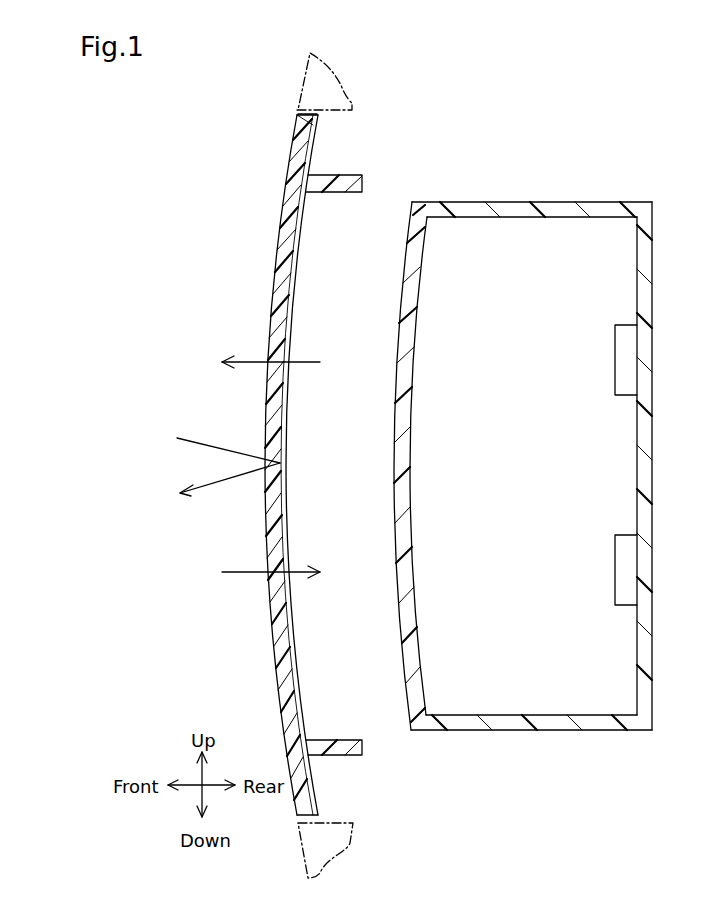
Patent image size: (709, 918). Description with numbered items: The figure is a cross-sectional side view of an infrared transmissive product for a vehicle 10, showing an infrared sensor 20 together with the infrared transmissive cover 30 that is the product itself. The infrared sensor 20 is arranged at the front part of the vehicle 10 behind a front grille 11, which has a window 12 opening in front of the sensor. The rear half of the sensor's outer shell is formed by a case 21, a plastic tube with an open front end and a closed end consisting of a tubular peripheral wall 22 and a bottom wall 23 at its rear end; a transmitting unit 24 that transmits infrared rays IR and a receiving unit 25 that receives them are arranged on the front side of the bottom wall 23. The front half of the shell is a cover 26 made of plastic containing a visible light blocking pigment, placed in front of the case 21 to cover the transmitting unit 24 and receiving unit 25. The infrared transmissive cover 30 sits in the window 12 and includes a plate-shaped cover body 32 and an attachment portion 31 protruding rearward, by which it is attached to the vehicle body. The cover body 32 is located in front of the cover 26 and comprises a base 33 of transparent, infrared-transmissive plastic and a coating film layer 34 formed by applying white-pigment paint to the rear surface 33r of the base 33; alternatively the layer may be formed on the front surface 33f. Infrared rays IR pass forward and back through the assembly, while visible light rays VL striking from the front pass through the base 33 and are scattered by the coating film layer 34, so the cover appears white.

The vehicle 10 is at (463, 106).
The front grille 11 is at (300, 62).
The window 12 is at (297, 117).
The infrared sensor 20 is at (548, 775).
The case 21 is at (680, 163).
The peripheral wall 22 is at (600, 207).
The bottom wall 23 is at (650, 237).
The transmitting unit 24 is at (615, 357).
The receiving unit 25 is at (615, 566).
The cover 26 is at (433, 207).
The infrared transmissive cover 30 is at (379, 108).
The attachment portion 31 is at (343, 180).
The cover body 32 is at (313, 117).
The base 33 is at (272, 303).
The front surface 33f is at (278, 237).
The rear surface 33r is at (299, 238).
The coating film layer 34 is at (287, 388).
The infrared rays IR is at (312, 357).
The visible light rays VL is at (202, 430).